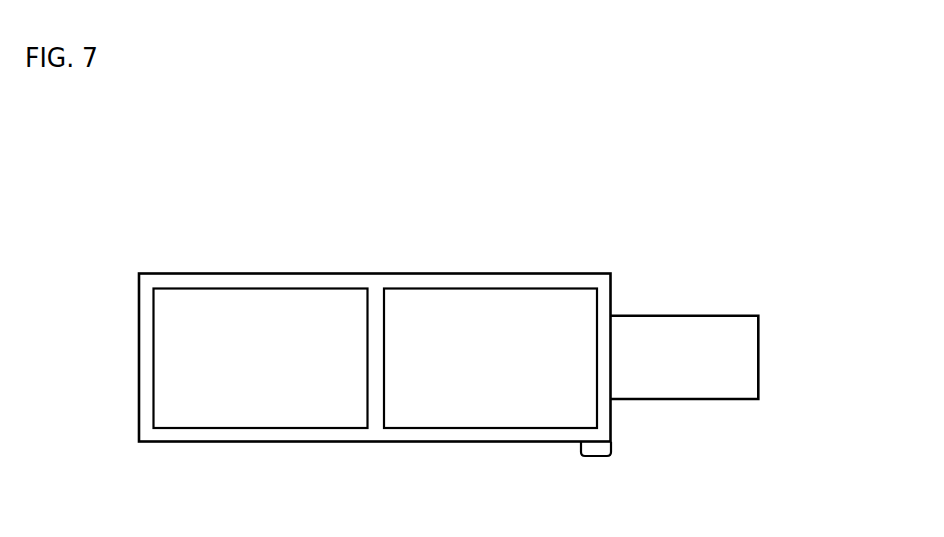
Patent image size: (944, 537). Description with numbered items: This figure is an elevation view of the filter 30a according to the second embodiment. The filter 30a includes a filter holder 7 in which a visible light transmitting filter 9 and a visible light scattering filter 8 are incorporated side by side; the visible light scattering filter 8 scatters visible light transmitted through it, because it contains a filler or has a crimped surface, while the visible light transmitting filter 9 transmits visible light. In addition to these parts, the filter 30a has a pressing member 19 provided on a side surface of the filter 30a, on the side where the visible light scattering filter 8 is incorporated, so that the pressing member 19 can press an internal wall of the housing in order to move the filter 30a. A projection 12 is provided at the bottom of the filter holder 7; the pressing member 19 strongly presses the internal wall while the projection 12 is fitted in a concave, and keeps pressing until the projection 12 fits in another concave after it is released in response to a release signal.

The filter holder 7 is at (585, 280).
The visible light scattering filter 8 is at (489, 297).
The visible light transmitting filter 9 is at (258, 297).
The projection 12 is at (595, 452).
The pressing member 19 is at (750, 353).
The filter 30a is at (744, 230).